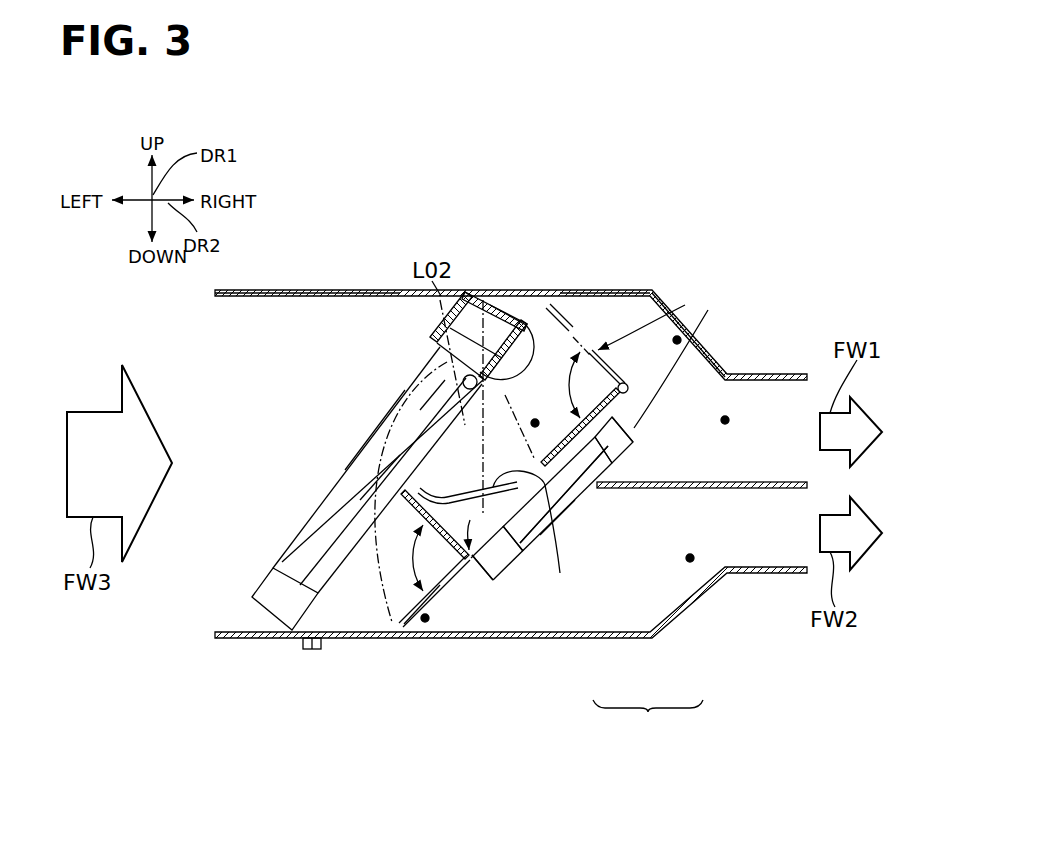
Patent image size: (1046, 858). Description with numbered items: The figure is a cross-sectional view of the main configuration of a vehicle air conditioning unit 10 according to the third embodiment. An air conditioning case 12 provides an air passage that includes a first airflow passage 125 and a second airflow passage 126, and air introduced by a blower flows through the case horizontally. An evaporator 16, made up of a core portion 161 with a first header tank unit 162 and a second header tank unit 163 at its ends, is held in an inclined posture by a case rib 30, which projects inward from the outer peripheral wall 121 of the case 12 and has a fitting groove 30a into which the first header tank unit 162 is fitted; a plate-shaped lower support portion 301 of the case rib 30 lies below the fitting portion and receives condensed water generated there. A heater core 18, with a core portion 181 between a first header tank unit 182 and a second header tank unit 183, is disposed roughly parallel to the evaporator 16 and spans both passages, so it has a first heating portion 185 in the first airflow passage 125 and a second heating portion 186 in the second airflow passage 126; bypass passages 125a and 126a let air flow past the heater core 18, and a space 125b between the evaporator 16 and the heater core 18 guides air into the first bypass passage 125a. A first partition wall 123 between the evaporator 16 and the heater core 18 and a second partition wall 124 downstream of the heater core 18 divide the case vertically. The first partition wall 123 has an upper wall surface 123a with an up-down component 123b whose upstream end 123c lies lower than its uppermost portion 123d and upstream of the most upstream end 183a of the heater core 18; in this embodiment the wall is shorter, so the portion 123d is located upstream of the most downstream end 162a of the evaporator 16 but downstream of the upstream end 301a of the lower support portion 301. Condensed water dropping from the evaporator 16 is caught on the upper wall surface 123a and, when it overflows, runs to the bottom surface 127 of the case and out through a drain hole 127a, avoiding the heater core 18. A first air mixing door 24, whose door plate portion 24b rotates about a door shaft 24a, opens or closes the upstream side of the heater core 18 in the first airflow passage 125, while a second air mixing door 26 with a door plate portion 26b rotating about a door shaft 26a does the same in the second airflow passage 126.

The vehicle air conditioning unit 10 is at (798, 228).
The air conditioning case 12 is at (627, 289).
The evaporator 16 is at (371, 395).
The heater core 18 is at (587, 587).
The first air mixing door 24 is at (668, 292).
The door shaft 24a is at (640, 367).
The door plate portion 24b is at (679, 338).
The second air mixing door 26 is at (433, 602).
The door shaft 26a is at (438, 596).
The door plate portion 26b is at (452, 480).
The case rib 30 is at (498, 300).
The fitting groove 30a is at (520, 322).
The outer peripheral wall 121 is at (290, 291).
The first partition wall 123 is at (440, 518).
The upper wall surface 123a is at (420, 442).
The up-down component 123b is at (437, 400).
The upstream end 123c is at (388, 406).
The uppermost portion 123d is at (561, 516).
The second partition wall 124 is at (767, 482).
The first airflow passage 125 is at (726, 419).
The first bypass passage 125a is at (684, 297).
The space 125b is at (612, 298).
The second airflow passage 126 is at (690, 560).
The second bypass passage 126a is at (425, 620).
The bottom surface 127 is at (248, 631).
The drain hole 127a is at (308, 650).
The core portion 161 is at (440, 410).
The first header tank unit 162 is at (475, 318).
The most downstream end 162a is at (526, 325).
The second header tank unit 163 is at (268, 598).
The core portion 181 is at (561, 532).
The first header tank unit 182 is at (618, 427).
The second header tank unit 183 is at (498, 564).
The most upstream end 183a is at (549, 525).
The first heating portion 185 is at (620, 464).
The second heating portion 186 is at (575, 545).
The lower support portion 301 is at (535, 421).
The upstream end 301a is at (570, 303).